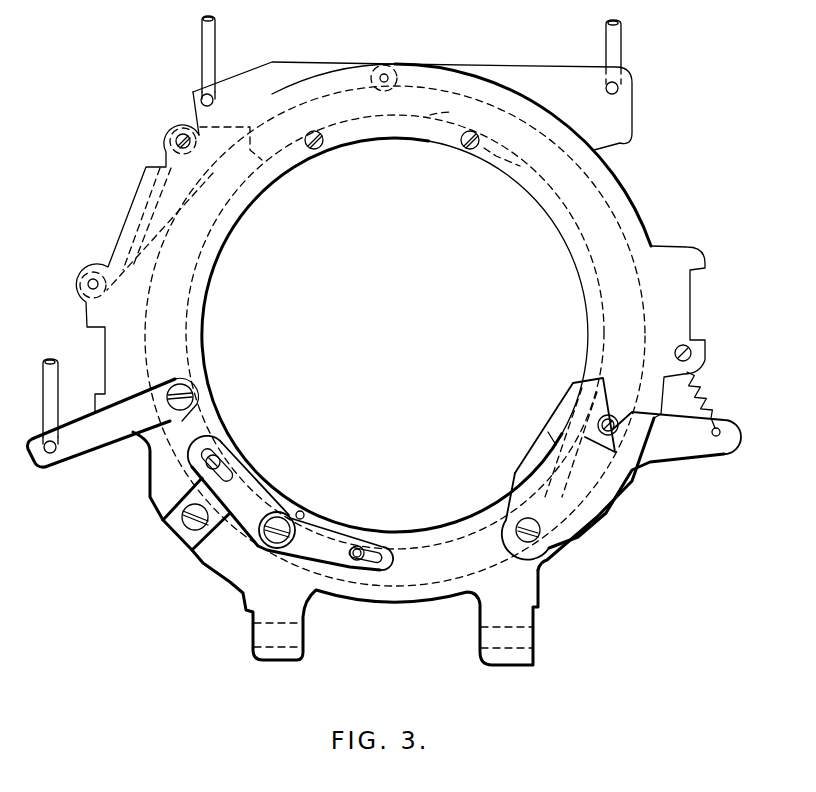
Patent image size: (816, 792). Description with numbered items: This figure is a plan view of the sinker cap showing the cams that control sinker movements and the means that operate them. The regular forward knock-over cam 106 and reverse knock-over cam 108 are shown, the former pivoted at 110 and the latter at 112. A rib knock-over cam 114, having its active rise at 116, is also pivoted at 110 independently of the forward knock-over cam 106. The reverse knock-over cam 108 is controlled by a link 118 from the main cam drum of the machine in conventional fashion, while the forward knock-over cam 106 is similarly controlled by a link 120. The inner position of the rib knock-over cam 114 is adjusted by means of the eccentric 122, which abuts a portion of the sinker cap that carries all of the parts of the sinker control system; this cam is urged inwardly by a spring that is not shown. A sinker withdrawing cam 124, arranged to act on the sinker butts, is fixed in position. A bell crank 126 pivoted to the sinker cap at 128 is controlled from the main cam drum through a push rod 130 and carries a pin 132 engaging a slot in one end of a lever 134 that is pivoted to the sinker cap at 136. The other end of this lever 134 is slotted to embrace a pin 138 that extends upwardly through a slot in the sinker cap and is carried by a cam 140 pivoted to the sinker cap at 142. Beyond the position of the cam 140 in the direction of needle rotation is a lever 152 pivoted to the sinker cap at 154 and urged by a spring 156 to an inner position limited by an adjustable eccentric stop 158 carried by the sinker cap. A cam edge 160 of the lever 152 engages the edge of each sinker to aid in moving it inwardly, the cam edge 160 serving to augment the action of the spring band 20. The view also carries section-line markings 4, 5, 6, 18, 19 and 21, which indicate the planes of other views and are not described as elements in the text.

The section line 4- 4 is at (386, 630).
The section line 5- 5 is at (445, 625).
The section line 6- 6 is at (512, 592).
The section line 18- 18 is at (660, 560).
The section line 19- 19 is at (718, 482).
The spring band 20 is at (735, 376).
The section line 21- 21 is at (740, 277).
The forward knock-over cam 106 is at (272, 105).
The reverse knock-over cam 108 is at (530, 70).
The pivot 110 is at (88, 284).
The pivot 112 is at (386, 75).
The rib knock-over cam 114 is at (174, 126).
The active rise 116 is at (245, 158).
The link 118 is at (617, 42).
The link 120 is at (211, 38).
The eccentric 122 is at (172, 145).
The sinker withdrawing cam 124 is at (427, 115).
The bell crank 126 is at (90, 449).
The pivot 128 is at (185, 391).
The push rod 130 is at (48, 402).
The pin 132 is at (216, 459).
The lever 134 is at (306, 548).
The pivot 136 is at (278, 521).
The pin 138 is at (360, 549).
The cam 140 is at (336, 533).
The pivot 142 is at (303, 513).
The lever 152 is at (627, 493).
The pivot 154 is at (528, 534).
The spring 156 is at (711, 401).
The adjustable eccentric stop 158 is at (611, 423).
The cam edge 160 is at (550, 442).